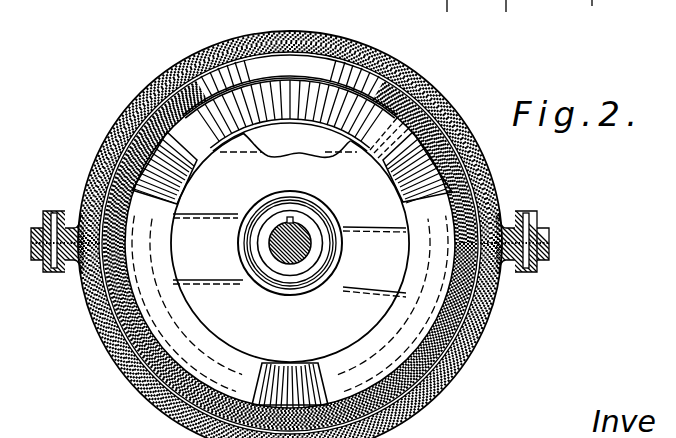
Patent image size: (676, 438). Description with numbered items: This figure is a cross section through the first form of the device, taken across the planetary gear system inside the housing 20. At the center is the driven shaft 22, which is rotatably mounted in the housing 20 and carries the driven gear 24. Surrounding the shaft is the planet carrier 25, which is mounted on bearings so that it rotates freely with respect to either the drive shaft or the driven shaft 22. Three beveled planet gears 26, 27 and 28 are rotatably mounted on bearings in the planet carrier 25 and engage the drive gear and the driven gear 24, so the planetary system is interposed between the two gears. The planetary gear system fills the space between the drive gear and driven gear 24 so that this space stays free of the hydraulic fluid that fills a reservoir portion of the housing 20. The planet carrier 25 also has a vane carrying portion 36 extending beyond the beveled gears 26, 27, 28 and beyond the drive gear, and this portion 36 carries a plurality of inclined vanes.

The housing 20 is at (178, 62).
The driven shaft 22 is at (268, 258).
The driven gear 24 is at (297, 82).
The planet carrier 25 is at (398, 295).
The beveled planet gear 26 is at (307, 367).
The beveled planet gear 27 is at (166, 172).
The beveled planet gear 28 is at (400, 173).
The vane carrying portion 36 is at (463, 193).